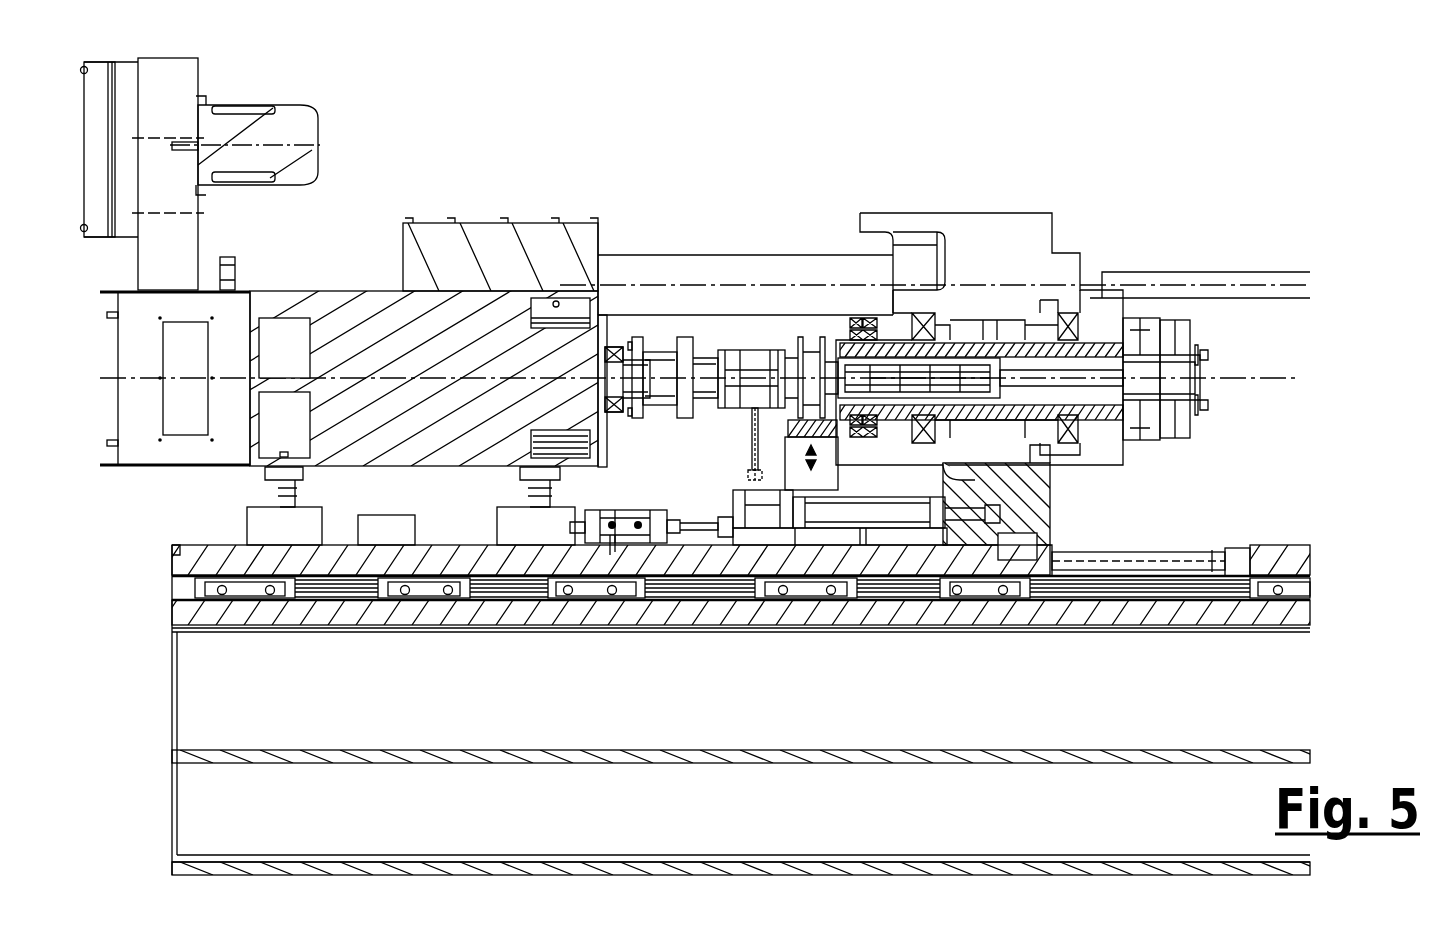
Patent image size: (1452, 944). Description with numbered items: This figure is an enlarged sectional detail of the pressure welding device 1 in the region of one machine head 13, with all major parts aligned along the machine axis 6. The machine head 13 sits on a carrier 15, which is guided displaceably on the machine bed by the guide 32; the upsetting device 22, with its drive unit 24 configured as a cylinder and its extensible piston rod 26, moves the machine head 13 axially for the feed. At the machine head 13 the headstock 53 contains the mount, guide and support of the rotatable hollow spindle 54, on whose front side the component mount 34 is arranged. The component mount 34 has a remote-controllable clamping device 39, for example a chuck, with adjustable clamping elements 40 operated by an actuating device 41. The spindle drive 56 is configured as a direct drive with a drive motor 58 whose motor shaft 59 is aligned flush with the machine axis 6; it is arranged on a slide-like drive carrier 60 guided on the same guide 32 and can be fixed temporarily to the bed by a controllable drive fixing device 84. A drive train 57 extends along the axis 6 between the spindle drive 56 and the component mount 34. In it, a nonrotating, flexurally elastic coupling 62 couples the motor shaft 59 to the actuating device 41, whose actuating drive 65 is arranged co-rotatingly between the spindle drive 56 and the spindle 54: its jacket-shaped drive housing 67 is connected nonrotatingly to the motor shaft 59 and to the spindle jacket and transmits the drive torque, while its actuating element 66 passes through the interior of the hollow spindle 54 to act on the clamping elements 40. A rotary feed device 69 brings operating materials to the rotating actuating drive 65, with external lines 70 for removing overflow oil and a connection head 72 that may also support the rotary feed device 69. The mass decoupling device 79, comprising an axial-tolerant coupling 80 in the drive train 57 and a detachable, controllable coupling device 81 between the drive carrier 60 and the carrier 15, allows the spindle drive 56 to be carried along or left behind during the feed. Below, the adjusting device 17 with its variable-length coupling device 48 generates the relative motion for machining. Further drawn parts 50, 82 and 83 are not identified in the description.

The pressure welding device 1 is at (1316, 214).
The machine axis 6 is at (1300, 375).
The machine head 13 is at (930, 217).
The carrier 15 is at (968, 562).
The adjusting device 17 is at (1266, 533).
The upsetting device 22 is at (1067, 253).
The drive unit 24 is at (1002, 291).
The piston rod 26 is at (1257, 283).
The guide 32 is at (1208, 592).
The component mount 34 is at (1140, 320).
The clamping device 39 is at (1177, 332).
The clamping elements 40 is at (1190, 438).
The actuating device 41 is at (803, 327).
The coupling device 48 is at (1160, 553).
The guide rail 50 is at (1118, 563).
The headstock 53 is at (1052, 310).
The spindle 54 is at (1040, 448).
The spindle drive 56 is at (335, 320).
The drive motor 58 is at (465, 262).
The drive train 57 is at (716, 333).
The motor shaft 59 is at (608, 345).
The drive carrier 60 is at (423, 550).
The coupling 62 is at (697, 412).
The actuating drive 65 is at (843, 347).
The actuating element 66 is at (893, 343).
The drive housing 67 is at (941, 279).
The rotary feed device 69 is at (753, 355).
The external lines 70 is at (907, 518).
The connection head 72 is at (760, 538).
The mass decoupling device 79 is at (793, 556).
The axial-tolerant coupling 80 is at (654, 335).
The coupling device 81 is at (699, 544).
The sensor 82 is at (683, 515).
The actuator 83 is at (632, 535).
The drive fixing device 84 is at (372, 528).